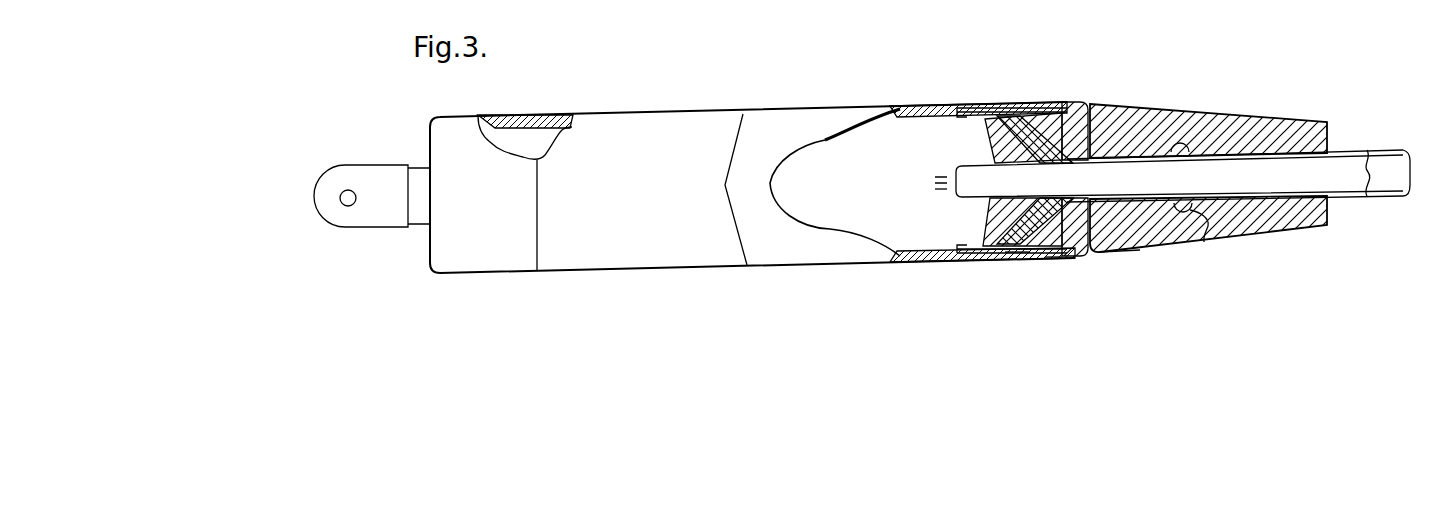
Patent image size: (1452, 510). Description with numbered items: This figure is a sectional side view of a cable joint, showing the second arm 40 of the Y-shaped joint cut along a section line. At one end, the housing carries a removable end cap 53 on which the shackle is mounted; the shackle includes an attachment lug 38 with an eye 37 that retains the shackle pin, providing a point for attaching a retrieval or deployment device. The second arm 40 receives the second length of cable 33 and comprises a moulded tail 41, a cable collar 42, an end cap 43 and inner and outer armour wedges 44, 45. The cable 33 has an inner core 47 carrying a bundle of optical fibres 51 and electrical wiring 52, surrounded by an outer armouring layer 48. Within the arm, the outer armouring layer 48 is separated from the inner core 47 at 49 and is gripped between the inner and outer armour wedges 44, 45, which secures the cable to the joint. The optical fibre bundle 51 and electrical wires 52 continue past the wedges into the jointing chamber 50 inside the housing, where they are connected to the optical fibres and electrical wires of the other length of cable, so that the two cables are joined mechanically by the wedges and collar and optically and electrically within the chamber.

The second length of cable 33 is at (1375, 200).
The eye 37 is at (340, 192).
The attachment lug 38 is at (385, 165).
The second arm 40 is at (1273, 102).
The moulded tail 41 is at (1150, 254).
The cable collar 42 is at (1205, 242).
The end cap 43 is at (1053, 260).
The inner armour wedge 44 is at (1023, 253).
The outer armour wedge 45 is at (1012, 128).
The inner core 47 is at (973, 160).
The outer armouring layer 48 is at (1168, 110).
The separation point 49 is at (1067, 102).
The jointing chamber 50 is at (828, 160).
The bundle of optical fibres 51 is at (945, 198).
The electrical wiring 52 is at (940, 168).
The removable end cap 53 is at (478, 273).